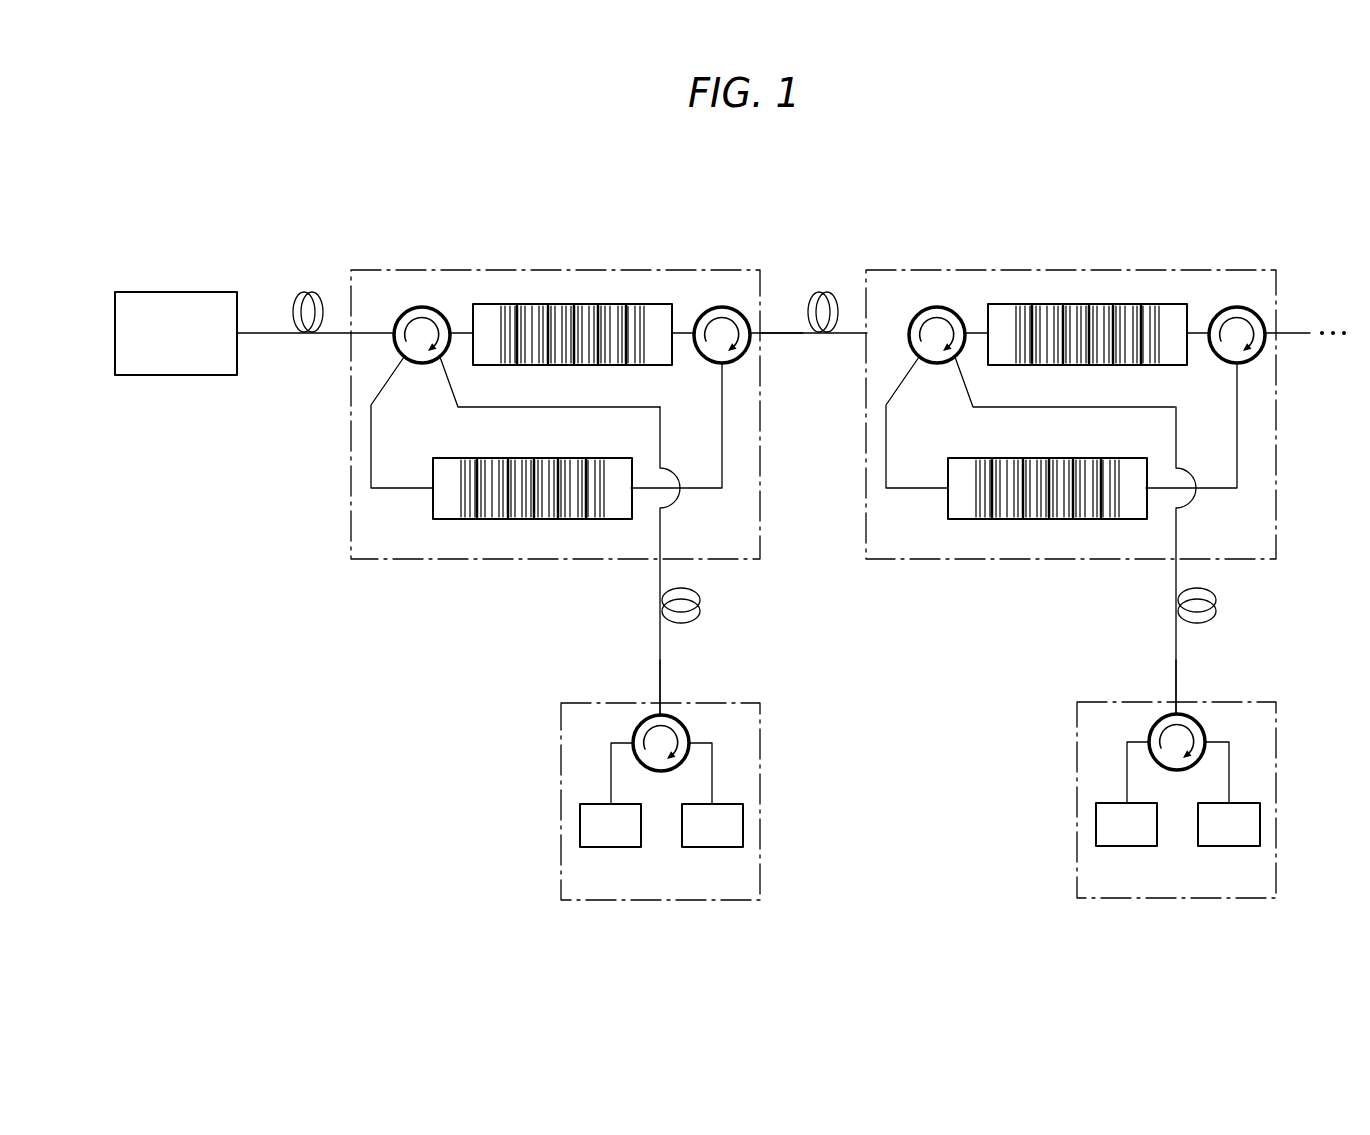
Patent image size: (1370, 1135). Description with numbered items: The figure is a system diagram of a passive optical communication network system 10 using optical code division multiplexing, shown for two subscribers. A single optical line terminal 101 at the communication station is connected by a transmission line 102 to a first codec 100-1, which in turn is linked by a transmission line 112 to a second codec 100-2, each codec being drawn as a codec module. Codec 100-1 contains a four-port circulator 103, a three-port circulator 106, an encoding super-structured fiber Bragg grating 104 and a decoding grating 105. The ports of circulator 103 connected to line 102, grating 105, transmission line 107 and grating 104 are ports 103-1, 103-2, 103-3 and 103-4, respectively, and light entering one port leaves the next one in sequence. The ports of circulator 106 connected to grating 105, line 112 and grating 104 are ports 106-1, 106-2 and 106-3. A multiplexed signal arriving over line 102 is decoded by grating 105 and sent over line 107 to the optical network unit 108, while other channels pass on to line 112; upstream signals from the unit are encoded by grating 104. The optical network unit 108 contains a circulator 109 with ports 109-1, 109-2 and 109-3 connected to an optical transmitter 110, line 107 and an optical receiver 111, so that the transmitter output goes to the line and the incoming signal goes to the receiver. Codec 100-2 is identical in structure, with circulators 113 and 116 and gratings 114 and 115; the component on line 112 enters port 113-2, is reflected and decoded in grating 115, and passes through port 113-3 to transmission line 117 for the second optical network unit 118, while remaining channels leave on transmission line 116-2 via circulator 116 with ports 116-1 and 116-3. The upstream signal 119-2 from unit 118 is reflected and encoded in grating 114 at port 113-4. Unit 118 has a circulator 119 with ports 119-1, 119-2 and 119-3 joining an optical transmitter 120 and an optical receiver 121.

The passive optical communication network system 10 is at (925, 643).
The optical line terminal 101 is at (178, 292).
The transmission line 102 is at (308, 292).
The circulator 103 is at (403, 310).
The port 103-1 is at (371, 330).
The port 103-2 is at (462, 330).
The port 103-3 is at (442, 366).
The port 103-4 is at (387, 373).
The super-structured fiber Bragg grating 104 is at (615, 518).
The super-structured fiber Bragg grating 105 is at (534, 304).
The circulator 106 is at (715, 307).
The port 106-1 is at (686, 331).
The port 106-2 is at (757, 335).
The port 106-3 is at (722, 423).
The transmission line 107 is at (700, 601).
The optical network unit 108 is at (761, 790).
The circulator 109 is at (642, 727).
The port 109-1 is at (623, 743).
The port 109-2 is at (661, 682).
The port 109-3 is at (699, 743).
The optical transmitter 110 is at (580, 826).
The optical receiver 111 is at (743, 826).
The transmission line 112 is at (826, 290).
The circulator 113 is at (912, 310).
The port 113-2 is at (957, 330).
The port 113-3 is at (957, 366).
The port 113-4 is at (886, 427).
The super-structured fiber Bragg grating 114 is at (1130, 518).
The super-structured fiber Bragg grating 115 is at (1029, 304).
The circulator 116 is at (1231, 306).
The port 116-1 is at (1198, 330).
The transmission line 116-2 is at (1292, 340).
The port 116-3 is at (1237, 452).
The transmission line 117 is at (1216, 601).
The optical network unit 118 is at (1277, 716).
The circulator 119 is at (1158, 727).
The port 119-1 is at (1141, 742).
The port 119-2 is at (1177, 680).
The port 119-3 is at (1230, 775).
The optical transmitter 120 is at (1096, 826).
The optical receiver 121 is at (1260, 826).
The codec 100-1 is at (601, 250).
The codec 100-2 is at (1088, 250).